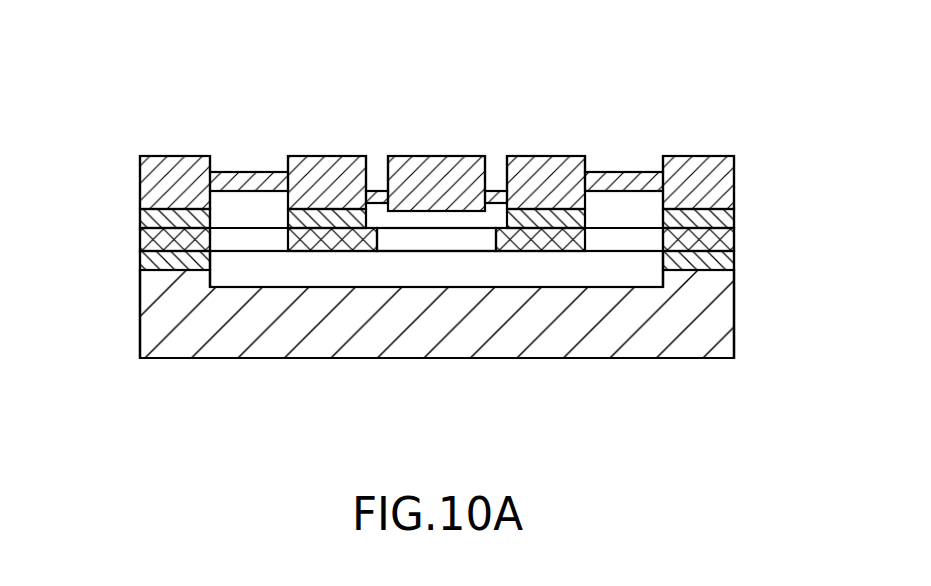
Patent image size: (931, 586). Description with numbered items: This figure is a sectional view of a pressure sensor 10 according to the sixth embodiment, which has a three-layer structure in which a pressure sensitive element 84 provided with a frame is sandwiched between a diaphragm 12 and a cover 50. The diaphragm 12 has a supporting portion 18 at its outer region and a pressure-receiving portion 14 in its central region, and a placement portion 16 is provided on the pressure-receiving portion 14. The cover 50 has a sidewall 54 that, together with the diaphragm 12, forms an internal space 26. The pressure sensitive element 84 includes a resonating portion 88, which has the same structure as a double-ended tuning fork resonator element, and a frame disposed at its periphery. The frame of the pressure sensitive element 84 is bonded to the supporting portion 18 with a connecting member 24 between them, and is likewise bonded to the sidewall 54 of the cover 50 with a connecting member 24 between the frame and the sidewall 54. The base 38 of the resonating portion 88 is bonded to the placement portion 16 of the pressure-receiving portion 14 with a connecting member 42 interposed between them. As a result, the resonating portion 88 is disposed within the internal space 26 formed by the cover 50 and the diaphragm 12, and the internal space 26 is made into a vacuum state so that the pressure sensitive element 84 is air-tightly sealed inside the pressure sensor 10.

The pressure sensor 10 is at (421, 102).
The diaphragm 12 is at (549, 146).
The pressure-receiving portion 14 is at (247, 172).
The placement portion 16 is at (380, 192).
The supporting portion 18 is at (140, 178).
The connecting member 24 is at (737, 213).
The internal space 26 is at (600, 268).
The base 38 is at (337, 251).
The connecting member 42 is at (288, 220).
The cover 50 is at (225, 372).
The sidewall 54 is at (138, 283).
The pressure sensitive element 84 is at (468, 265).
The resonating portion 88 is at (437, 251).